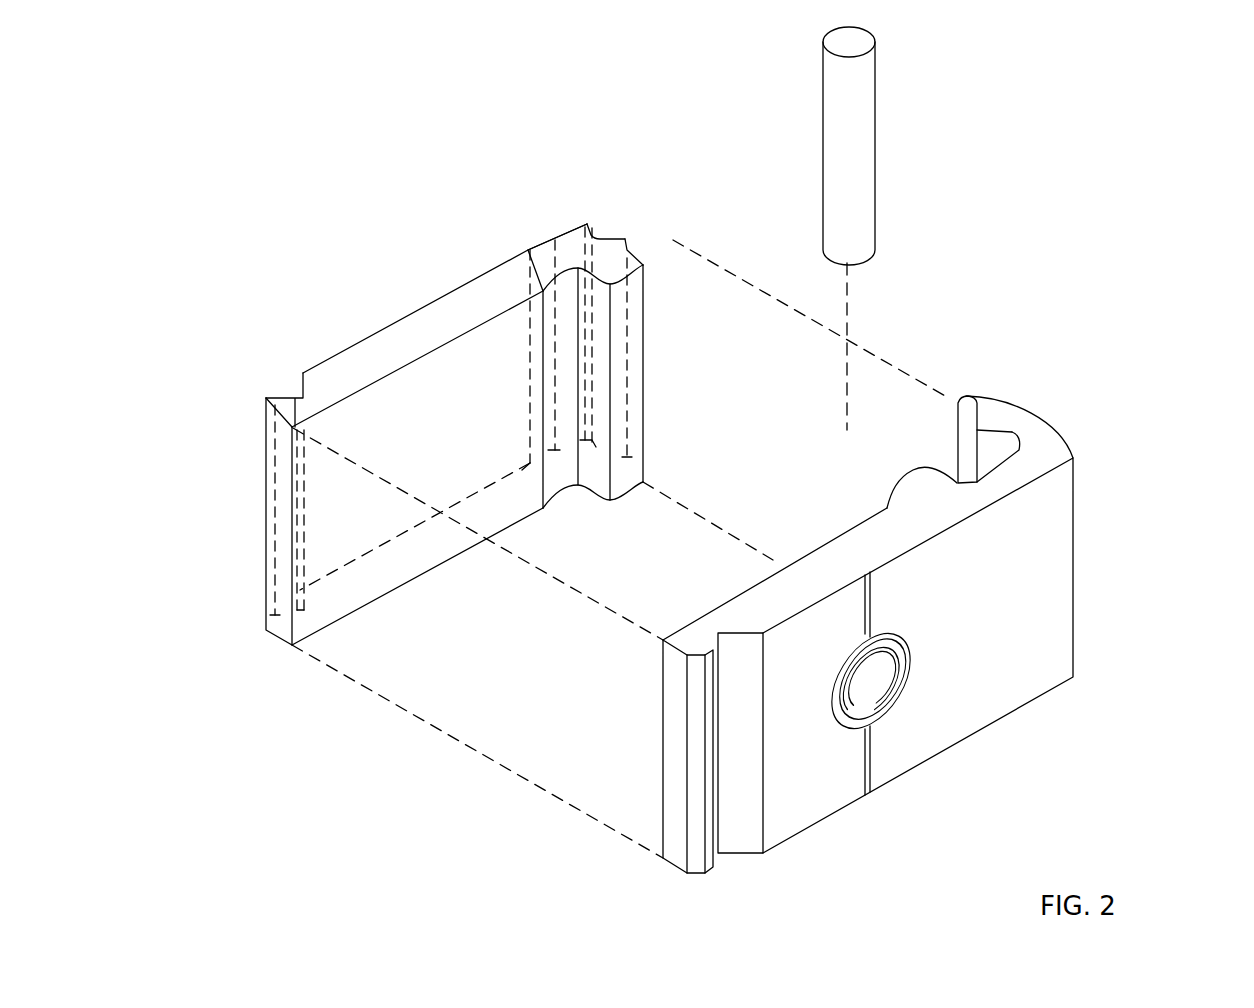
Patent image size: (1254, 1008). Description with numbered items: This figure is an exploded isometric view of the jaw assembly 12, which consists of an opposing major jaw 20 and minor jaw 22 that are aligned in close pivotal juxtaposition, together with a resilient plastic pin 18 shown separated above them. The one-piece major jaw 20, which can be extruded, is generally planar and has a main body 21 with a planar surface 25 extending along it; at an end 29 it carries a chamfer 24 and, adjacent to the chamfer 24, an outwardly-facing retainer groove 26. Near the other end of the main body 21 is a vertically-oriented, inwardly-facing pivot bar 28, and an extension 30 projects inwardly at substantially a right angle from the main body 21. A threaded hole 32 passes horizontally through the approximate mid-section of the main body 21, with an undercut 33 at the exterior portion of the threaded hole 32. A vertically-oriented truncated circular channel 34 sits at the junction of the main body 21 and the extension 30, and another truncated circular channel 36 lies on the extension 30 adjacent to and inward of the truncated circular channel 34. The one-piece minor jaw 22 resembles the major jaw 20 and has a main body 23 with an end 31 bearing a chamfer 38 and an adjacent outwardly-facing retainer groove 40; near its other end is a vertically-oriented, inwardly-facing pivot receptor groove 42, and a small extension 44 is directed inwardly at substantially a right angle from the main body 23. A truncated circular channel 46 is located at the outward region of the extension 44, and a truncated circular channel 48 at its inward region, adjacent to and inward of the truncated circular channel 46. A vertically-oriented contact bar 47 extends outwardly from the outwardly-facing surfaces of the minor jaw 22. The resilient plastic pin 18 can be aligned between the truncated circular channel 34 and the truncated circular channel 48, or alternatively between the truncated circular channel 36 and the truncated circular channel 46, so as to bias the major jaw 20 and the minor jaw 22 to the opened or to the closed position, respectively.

The jaw assembly 12 is at (407, 213).
The resilient plastic pin 18 is at (837, 175).
The major jaw 20 is at (1030, 708).
The main body 21 is at (955, 705).
The minor jaw 22 is at (430, 300).
The main body 23 is at (388, 352).
The chamfer 24 is at (693, 833).
The planar surface 25 is at (1032, 622).
The retainer groove 26 is at (743, 778).
The pivot bar 28 is at (922, 480).
The end 29 is at (673, 778).
The extension 30 is at (1018, 415).
The end 31 is at (278, 556).
The threaded hole 32 is at (875, 700).
The undercut 33 is at (900, 659).
The truncated circular channel 34 is at (1007, 447).
The truncated circular channel 36 is at (965, 420).
The chamfer 38 is at (266, 402).
The retainer groove 40 is at (303, 390).
The pivot receptor groove 42 is at (563, 288).
The small extension 44 is at (617, 270).
The truncated circular channel 46 is at (598, 230).
The contact bar 47 is at (548, 238).
The truncated circular channel 48 is at (625, 265).